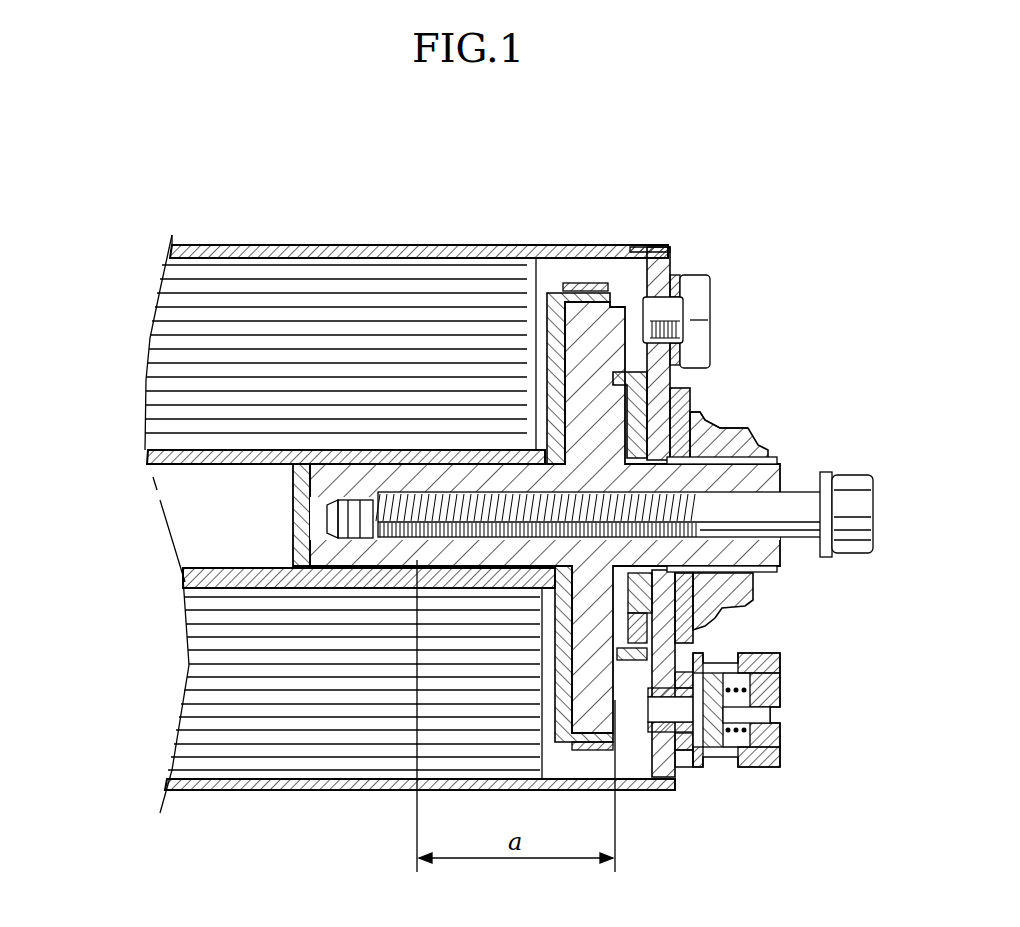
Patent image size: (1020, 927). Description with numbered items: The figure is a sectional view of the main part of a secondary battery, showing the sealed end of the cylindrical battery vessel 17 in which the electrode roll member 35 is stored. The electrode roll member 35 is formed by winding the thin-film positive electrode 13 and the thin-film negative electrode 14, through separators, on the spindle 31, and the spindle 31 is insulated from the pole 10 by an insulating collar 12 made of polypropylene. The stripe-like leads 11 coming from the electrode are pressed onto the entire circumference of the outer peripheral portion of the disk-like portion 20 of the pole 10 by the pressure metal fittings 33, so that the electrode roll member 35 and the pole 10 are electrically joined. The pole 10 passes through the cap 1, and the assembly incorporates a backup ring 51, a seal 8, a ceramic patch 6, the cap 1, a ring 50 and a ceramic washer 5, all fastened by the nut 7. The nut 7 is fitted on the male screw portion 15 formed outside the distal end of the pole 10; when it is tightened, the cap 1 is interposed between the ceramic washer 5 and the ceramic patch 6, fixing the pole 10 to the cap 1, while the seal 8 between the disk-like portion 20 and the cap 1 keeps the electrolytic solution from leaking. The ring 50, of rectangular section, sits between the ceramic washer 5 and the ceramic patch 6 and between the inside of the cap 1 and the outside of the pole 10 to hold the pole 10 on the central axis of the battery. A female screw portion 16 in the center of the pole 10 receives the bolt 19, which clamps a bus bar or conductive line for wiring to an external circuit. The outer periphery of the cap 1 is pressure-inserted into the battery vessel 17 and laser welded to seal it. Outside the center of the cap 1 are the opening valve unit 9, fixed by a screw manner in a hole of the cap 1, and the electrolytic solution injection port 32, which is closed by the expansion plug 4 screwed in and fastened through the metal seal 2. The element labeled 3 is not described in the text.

The cap 1 is at (672, 250).
The metal seal 2 is at (690, 278).
The support sleeve 3 is at (700, 768).
The expansion plug 4 is at (700, 307).
The ceramic washer 5 is at (690, 400).
The ceramic patch 6 is at (715, 605).
The nut 7 is at (755, 440).
The seal 8 is at (652, 655).
The opening valve unit 9 is at (782, 757).
The pole 10 is at (678, 752).
The stripe-like lead 11 is at (622, 705).
The insulating collar 12 is at (545, 342).
The positive electrode 13 is at (313, 740).
The negative electrode 14 is at (233, 730).
The male screw portion 15 is at (772, 460).
The female screw portion 16 is at (390, 548).
The battery vessel 17 is at (229, 247).
The bolt 19 is at (875, 517).
The disk-like portion 20 is at (595, 302).
The spindle 31 is at (150, 458).
The electrolytic solution injection port 32 is at (655, 315).
The pressure metal fitting 33 is at (565, 290).
The electrode roll member 35 is at (125, 318).
The ring 50 is at (722, 426).
The backup ring 51 is at (650, 375).